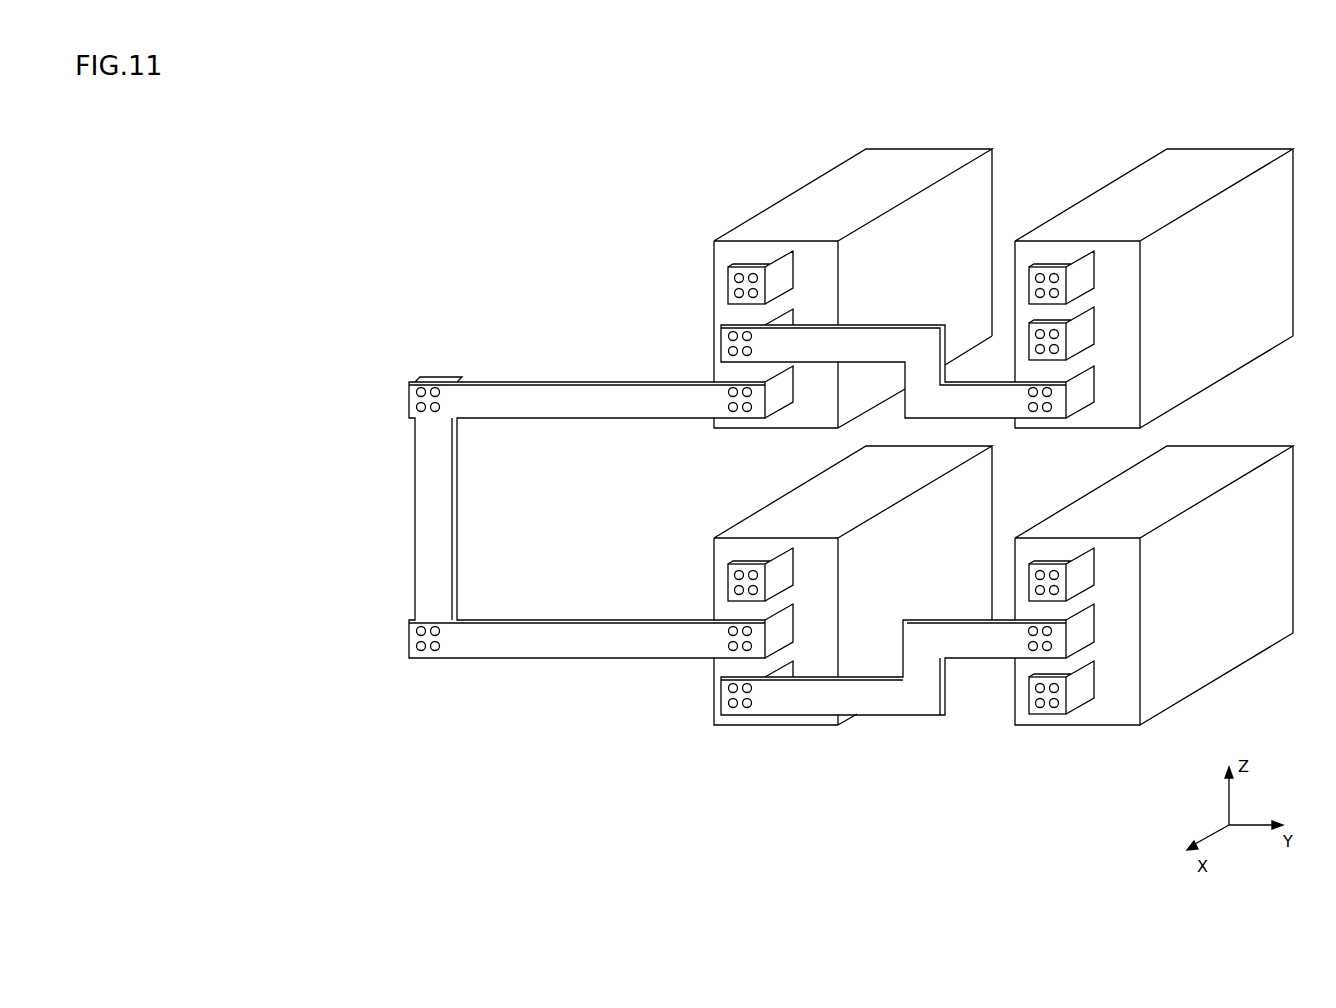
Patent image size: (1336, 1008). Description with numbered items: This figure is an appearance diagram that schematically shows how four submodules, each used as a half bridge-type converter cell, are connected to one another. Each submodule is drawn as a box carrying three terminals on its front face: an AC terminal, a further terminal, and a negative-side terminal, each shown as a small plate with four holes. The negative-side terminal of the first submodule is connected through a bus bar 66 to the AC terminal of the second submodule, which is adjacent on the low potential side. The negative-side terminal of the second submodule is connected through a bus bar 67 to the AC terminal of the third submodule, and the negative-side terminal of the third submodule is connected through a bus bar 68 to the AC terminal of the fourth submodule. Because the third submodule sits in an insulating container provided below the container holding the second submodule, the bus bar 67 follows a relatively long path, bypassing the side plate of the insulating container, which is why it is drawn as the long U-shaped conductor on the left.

The bus bar 66 is at (1008, 412).
The bus bar 67 is at (441, 520).
The bus bar 68 is at (983, 658).